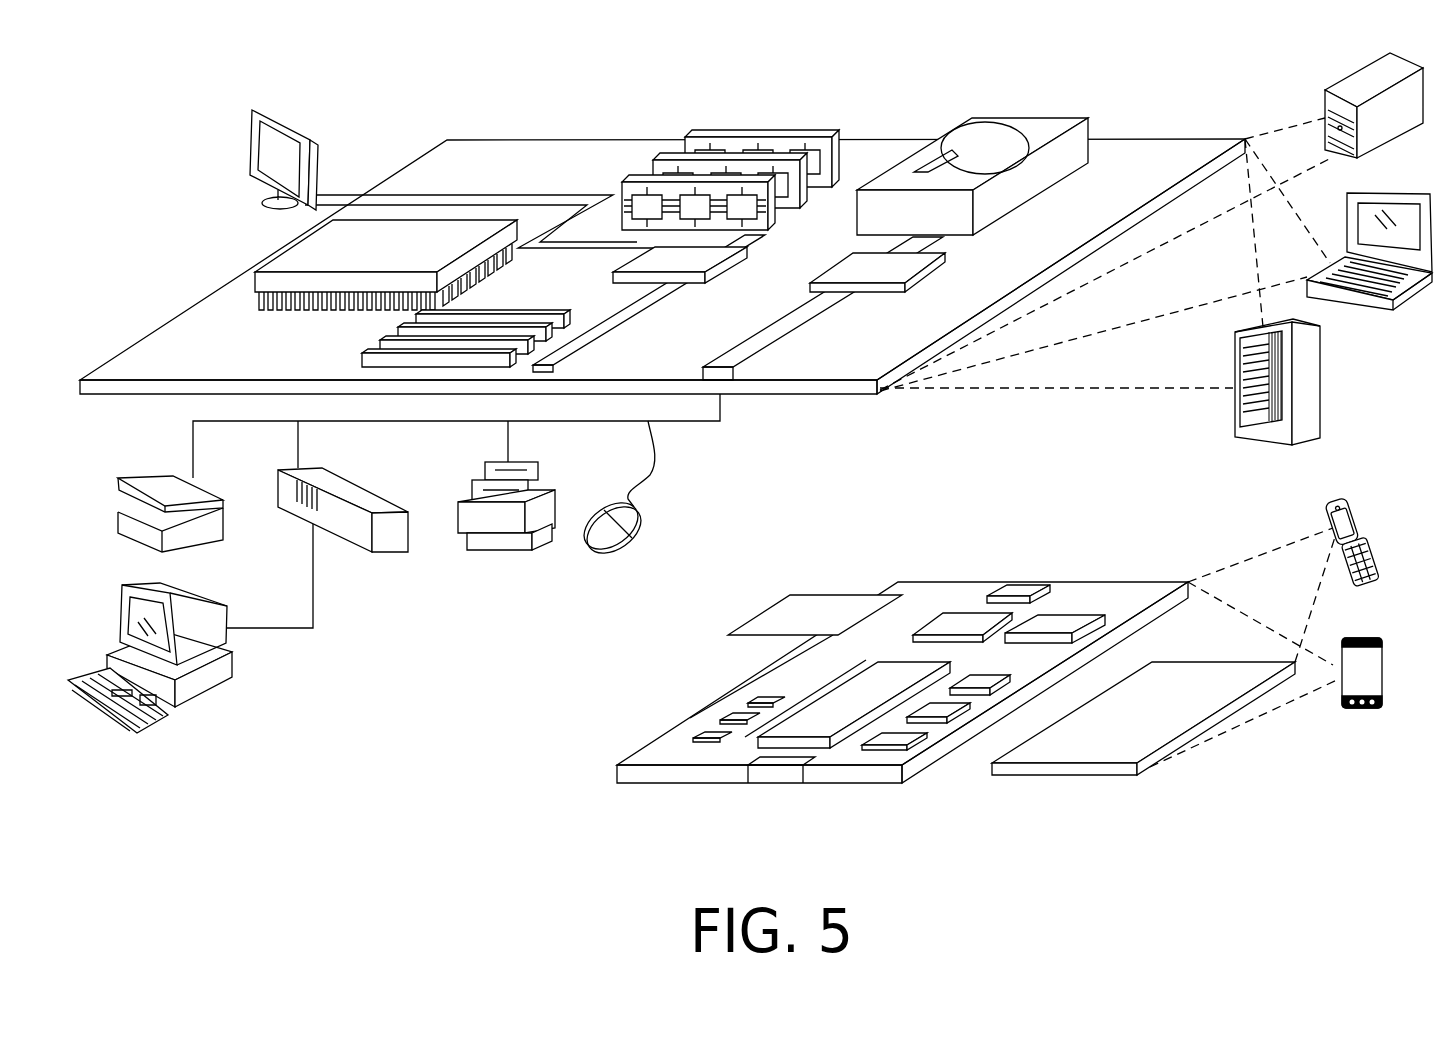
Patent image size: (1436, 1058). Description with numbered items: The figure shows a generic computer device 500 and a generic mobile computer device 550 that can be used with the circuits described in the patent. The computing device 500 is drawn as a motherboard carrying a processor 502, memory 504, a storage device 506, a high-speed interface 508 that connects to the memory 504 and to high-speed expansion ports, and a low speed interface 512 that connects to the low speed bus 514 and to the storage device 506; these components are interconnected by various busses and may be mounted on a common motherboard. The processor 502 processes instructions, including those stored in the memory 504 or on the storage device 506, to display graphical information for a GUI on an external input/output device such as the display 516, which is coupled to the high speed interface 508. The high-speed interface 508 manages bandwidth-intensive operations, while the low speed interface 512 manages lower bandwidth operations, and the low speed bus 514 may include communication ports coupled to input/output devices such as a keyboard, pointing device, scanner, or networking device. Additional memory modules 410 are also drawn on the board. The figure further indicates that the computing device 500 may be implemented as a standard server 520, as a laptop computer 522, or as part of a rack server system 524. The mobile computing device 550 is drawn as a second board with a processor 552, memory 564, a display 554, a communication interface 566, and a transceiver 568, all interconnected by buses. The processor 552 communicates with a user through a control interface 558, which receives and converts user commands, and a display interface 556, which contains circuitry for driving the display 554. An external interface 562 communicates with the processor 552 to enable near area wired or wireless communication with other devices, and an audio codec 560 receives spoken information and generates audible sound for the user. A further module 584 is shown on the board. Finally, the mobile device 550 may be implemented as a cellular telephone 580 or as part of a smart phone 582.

The generic computer device 500 is at (394, 80).
The processor 502 is at (282, 255).
The memory 504 is at (768, 133).
The storage device 506 is at (1018, 115).
The high-speed interface 508 is at (693, 257).
The low speed interface 512 is at (852, 262).
The low speed bus 514 is at (728, 360).
The display 516 is at (256, 108).
The memory modules 410 is at (390, 338).
The standard server 520 is at (1348, 83).
The laptop computer 522 is at (1408, 193).
The rack server system 524 is at (1323, 382).
The generic mobile computer device 550 is at (1236, 780).
The processor 552 is at (820, 712).
The display 554 is at (1187, 678).
The display interface 556 is at (917, 742).
The control interface 558 is at (947, 708).
The audio codec 560 is at (985, 678).
The external interface 562 is at (882, 595).
The memory 564 is at (728, 715).
The communication interface 566 is at (963, 617).
The transceiver 568 is at (1062, 618).
The cellular telephone 580 is at (1020, 588).
The smart phone 582 is at (1352, 637).
The module 584 is at (792, 595).